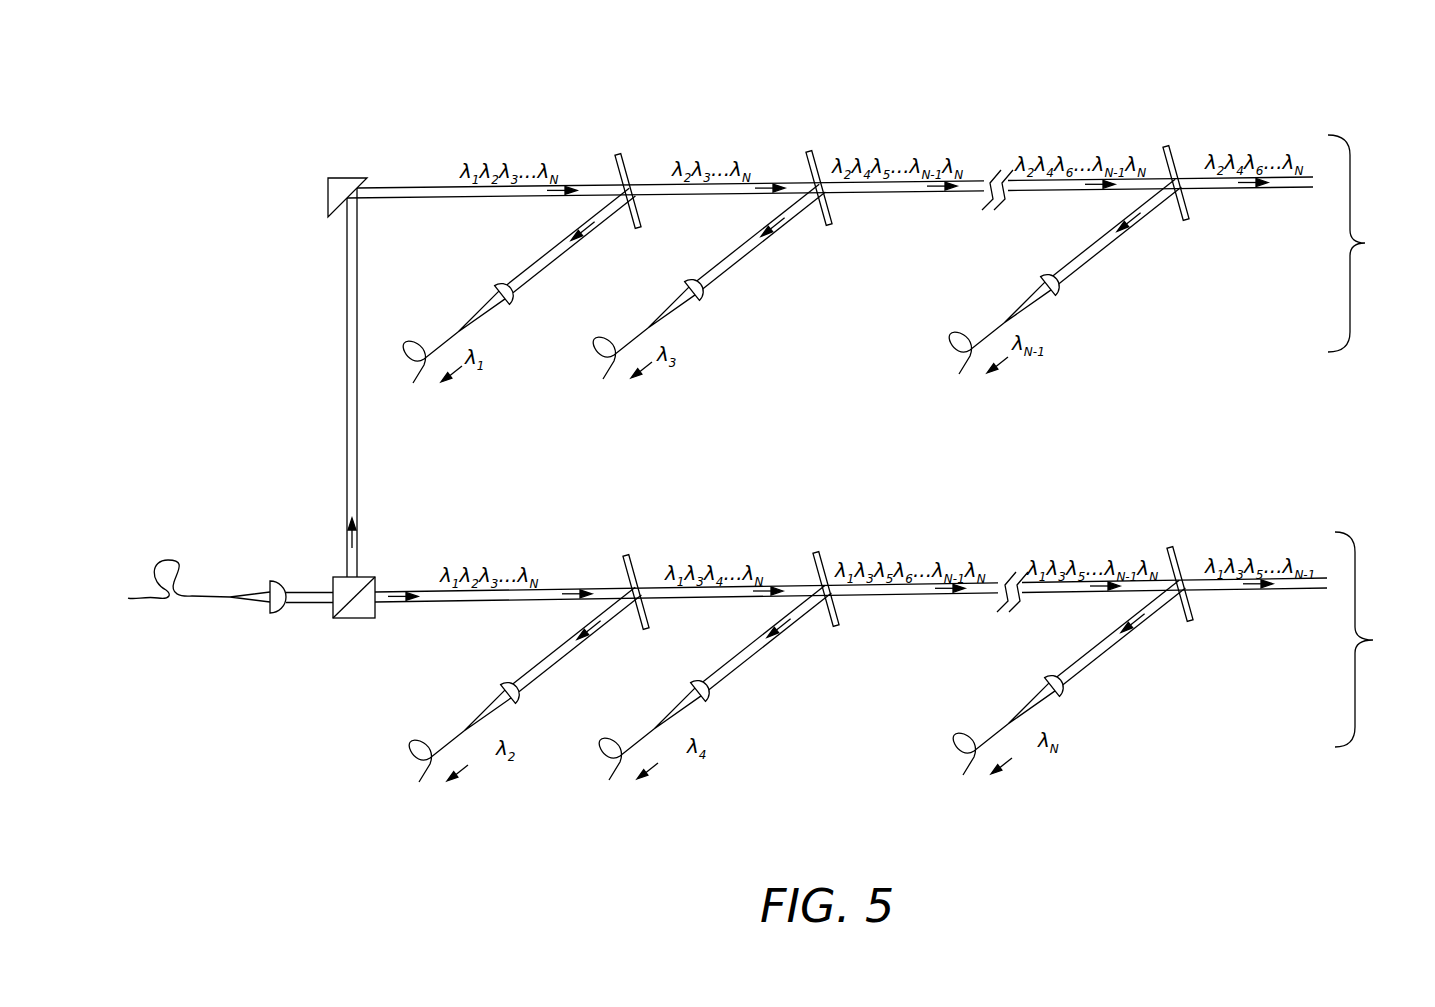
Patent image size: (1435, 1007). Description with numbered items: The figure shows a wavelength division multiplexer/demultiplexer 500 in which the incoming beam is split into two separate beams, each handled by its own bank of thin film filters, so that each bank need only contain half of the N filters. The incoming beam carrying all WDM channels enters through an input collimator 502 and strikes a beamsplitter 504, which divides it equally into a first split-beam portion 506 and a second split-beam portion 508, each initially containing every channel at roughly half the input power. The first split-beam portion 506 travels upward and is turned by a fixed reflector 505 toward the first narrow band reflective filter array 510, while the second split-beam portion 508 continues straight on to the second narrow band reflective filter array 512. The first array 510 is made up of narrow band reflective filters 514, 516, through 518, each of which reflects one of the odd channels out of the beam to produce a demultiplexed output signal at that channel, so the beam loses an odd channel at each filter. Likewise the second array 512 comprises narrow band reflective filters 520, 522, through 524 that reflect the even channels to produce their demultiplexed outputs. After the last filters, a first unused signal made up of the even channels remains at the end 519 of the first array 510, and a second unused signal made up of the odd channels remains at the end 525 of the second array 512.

The wavelength division multiplexer/demultiplexer 500 is at (220, 100).
The input collimator 502 is at (272, 580).
The beamsplitter 504 is at (354, 620).
The fixed reflector 505 is at (336, 177).
The first split-beam portion 506 is at (401, 187).
The second split-beam portion 508 is at (400, 590).
The first narrow band reflective filter array 510 is at (1375, 243).
The second narrow band reflective filter array 512 is at (1382, 639).
The narrow band reflective filter 514 is at (618, 153).
The narrow band reflective filter 516 is at (808, 150).
The narrow band reflective filter 518 is at (1167, 144).
The end of the first narrow band reflective filter array 519 is at (1308, 188).
The narrow band reflective filter 520 is at (626, 554).
The narrow band reflective filter 522 is at (815, 551).
The narrow band reflective filter 524 is at (1170, 546).
The end of the second narrow band reflective filter array 525 is at (1305, 590).